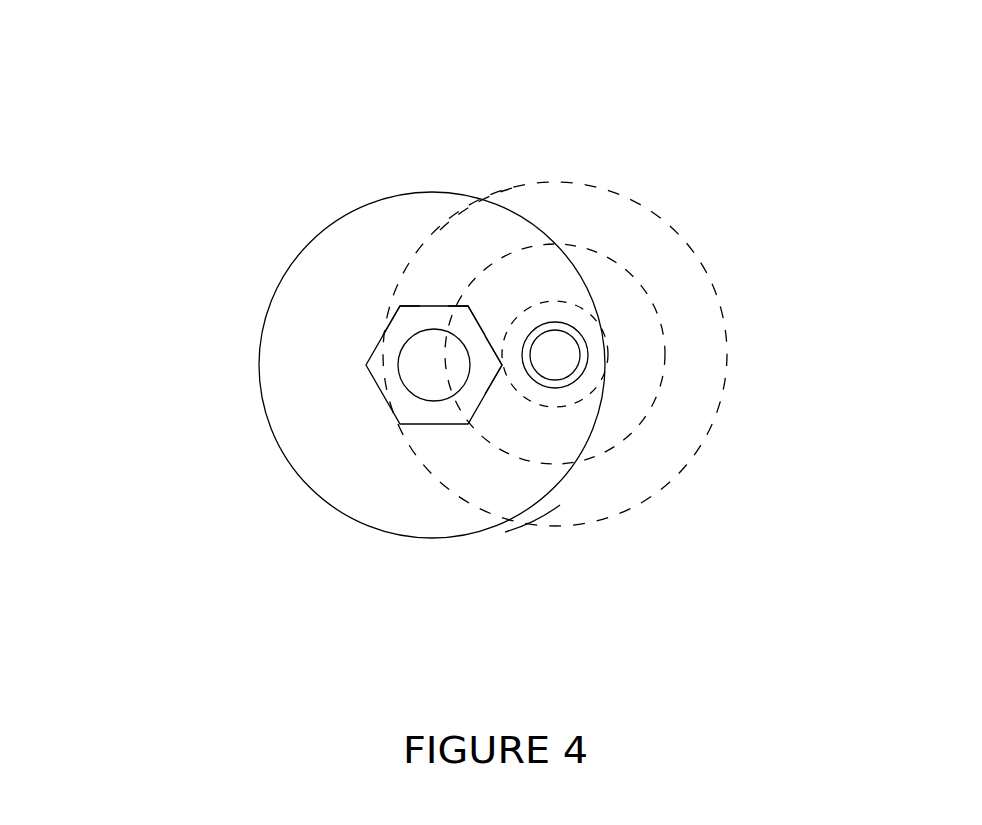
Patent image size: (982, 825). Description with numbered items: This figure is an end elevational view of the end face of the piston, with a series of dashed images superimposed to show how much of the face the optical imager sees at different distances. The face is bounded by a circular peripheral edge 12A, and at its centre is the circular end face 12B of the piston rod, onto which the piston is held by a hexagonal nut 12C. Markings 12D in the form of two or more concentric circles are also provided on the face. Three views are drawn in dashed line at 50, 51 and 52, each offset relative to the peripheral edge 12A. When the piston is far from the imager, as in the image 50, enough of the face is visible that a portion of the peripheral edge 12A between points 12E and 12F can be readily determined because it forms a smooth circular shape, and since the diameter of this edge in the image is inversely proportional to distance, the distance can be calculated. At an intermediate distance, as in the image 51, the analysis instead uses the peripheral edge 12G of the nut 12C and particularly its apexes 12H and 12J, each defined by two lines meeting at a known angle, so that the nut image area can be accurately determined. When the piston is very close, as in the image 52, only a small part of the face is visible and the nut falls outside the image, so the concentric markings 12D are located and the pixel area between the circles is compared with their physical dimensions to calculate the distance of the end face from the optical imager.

The peripheral edge 12A is at (343, 365).
The central circular end face of the piston rod 12B is at (302, 441).
The hexagonal nut 12C is at (272, 355).
The markings 12D is at (432, 515).
The point on the peripheral surface 12E is at (406, 181).
The point on the peripheral surface 12F is at (602, 580).
The peripheral edge of the nut 12G is at (280, 265).
The apex 12H is at (595, 183).
The apex 12J is at (385, 485).
The image 50 is at (621, 354).
The image 51 is at (665, 354).
The image 52 is at (656, 295).